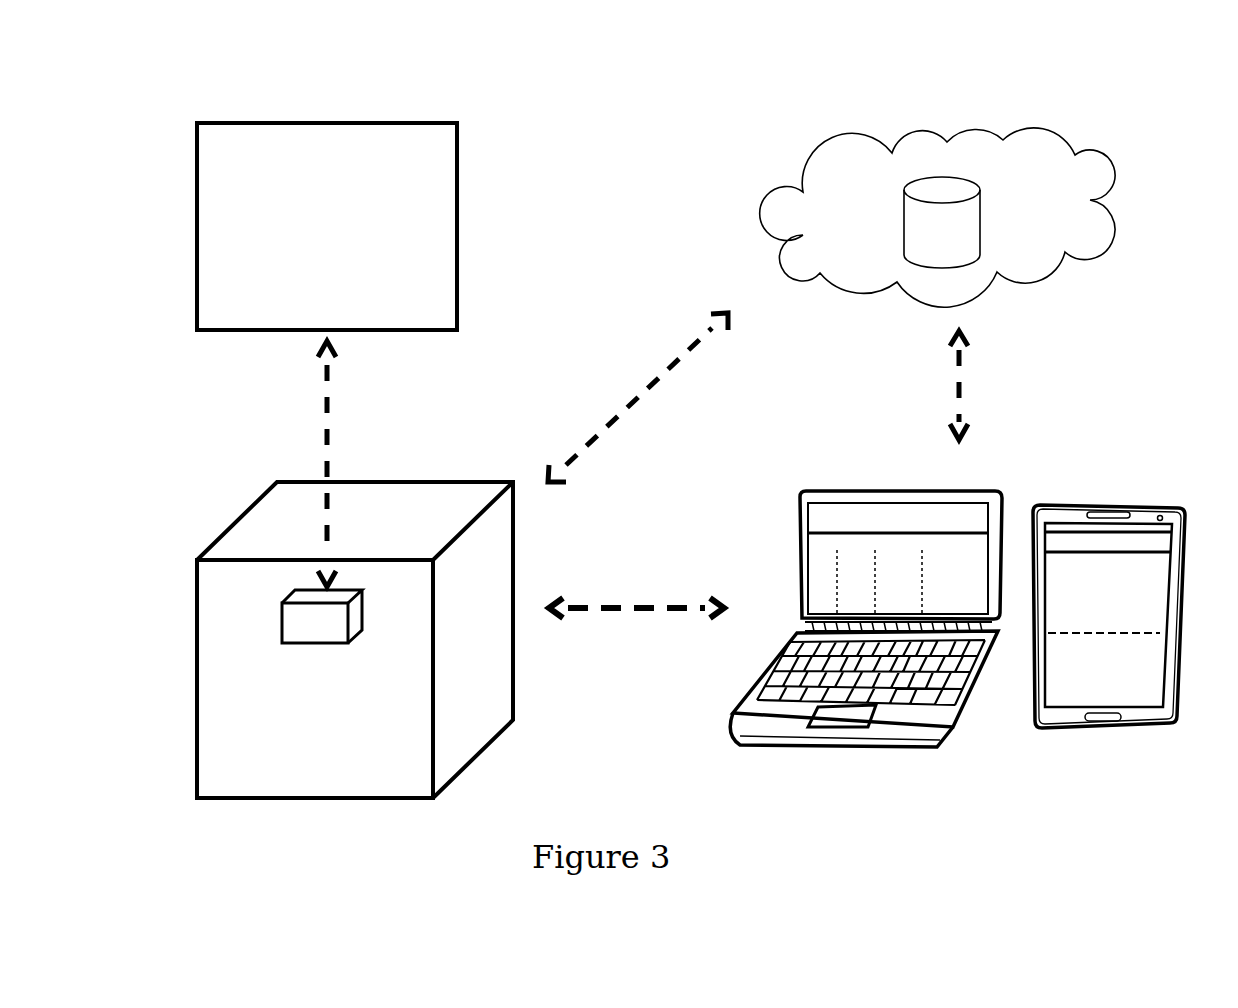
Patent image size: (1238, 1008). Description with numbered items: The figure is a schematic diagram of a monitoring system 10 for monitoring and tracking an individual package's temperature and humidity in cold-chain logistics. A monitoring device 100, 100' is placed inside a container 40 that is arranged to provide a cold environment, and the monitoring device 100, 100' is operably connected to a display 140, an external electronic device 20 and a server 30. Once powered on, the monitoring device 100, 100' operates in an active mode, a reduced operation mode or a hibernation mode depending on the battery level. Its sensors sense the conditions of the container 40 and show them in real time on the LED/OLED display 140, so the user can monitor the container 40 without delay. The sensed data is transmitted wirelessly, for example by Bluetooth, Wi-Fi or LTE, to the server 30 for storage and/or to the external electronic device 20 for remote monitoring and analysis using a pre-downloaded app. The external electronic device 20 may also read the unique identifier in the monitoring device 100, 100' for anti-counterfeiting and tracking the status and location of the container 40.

The monitoring system 10 is at (584, 85).
The external electronic device 20 is at (1012, 744).
The server 30 is at (945, 190).
The container 40 is at (430, 735).
The monitoring device 100 is at (239, 614).
The monitoring device 100' is at (239, 616).
The display 140 is at (327, 226).